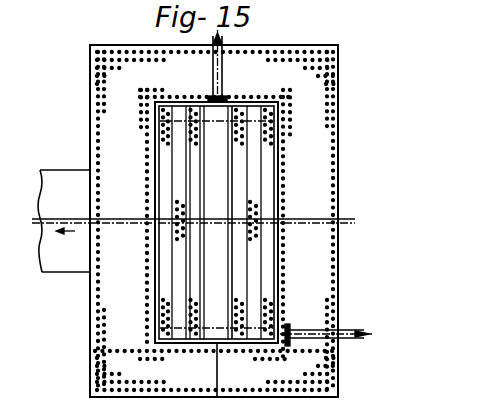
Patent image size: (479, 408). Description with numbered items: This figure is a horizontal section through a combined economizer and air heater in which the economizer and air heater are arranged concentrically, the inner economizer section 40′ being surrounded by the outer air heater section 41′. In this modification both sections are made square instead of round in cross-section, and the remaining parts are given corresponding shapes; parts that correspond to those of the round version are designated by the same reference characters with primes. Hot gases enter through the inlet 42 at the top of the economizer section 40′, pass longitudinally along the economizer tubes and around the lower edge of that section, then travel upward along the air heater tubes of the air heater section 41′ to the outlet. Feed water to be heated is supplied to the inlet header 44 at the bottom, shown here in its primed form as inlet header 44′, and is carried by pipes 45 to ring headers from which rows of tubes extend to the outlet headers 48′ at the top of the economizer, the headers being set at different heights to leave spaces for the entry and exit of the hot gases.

The air heater section 41′ is at (336, 186).
The economizer section 40′ is at (148, 276).
The pipes 45 is at (215, 277).
The ring outlet headers 48′ is at (238, 163).
The inlet header 44′ is at (240, 305).
The inlet header 44 is at (252, 352).
The inlet 42 is at (66, 268).